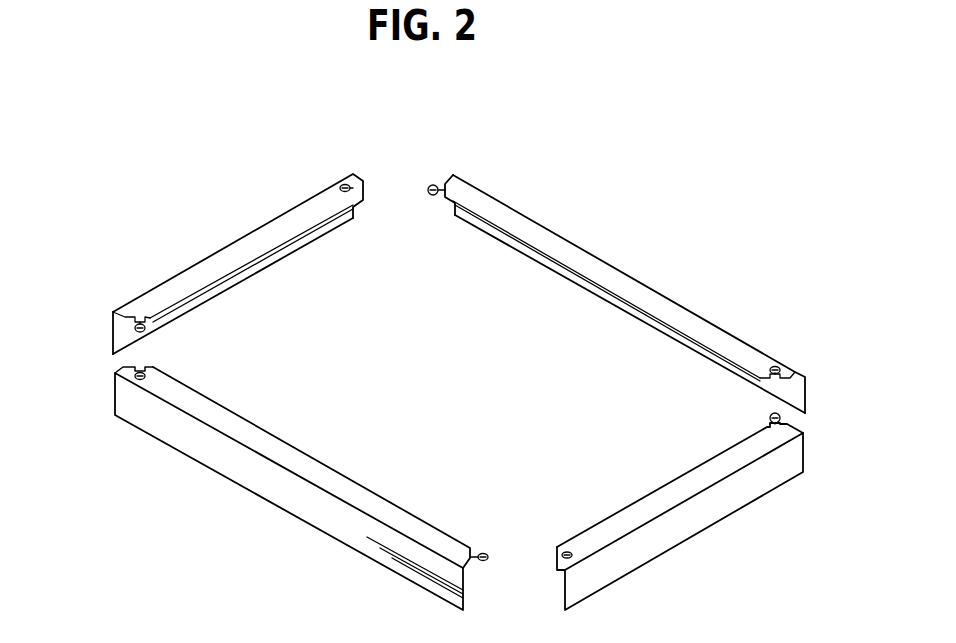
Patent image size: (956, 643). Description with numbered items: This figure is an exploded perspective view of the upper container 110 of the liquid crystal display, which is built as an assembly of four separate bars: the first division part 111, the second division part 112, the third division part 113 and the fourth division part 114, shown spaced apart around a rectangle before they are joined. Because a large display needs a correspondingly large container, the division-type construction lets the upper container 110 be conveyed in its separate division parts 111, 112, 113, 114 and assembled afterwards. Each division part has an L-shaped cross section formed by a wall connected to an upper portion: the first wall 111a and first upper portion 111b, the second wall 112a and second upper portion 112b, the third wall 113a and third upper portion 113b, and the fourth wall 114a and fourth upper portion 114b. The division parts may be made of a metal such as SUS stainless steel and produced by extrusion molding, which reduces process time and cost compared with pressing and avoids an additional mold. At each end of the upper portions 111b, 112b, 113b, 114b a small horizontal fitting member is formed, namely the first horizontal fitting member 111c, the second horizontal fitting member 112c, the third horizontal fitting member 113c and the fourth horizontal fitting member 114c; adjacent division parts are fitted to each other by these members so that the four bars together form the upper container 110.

The upper container 110 is at (593, 82).
The first division part 111 is at (204, 484).
The first wall 111a is at (333, 525).
The first upper portion 111b is at (333, 480).
The first horizontal fitting member 111c is at (136, 376).
The second division part 112 is at (762, 522).
The second wall 112a is at (643, 548).
The second upper portion 112b is at (678, 487).
The second horizontal fitting member 112c is at (563, 550).
The third division part 113 is at (698, 284).
The third wall 113a is at (570, 273).
The third upper portion 113b is at (602, 270).
The third horizontal fitting member 113c is at (431, 184).
The fourth division part 114 is at (171, 254).
The fourth wall 114a is at (253, 268).
The fourth upper portion 114b is at (243, 245).
The fourth horizontal fitting member 114c is at (135, 330).